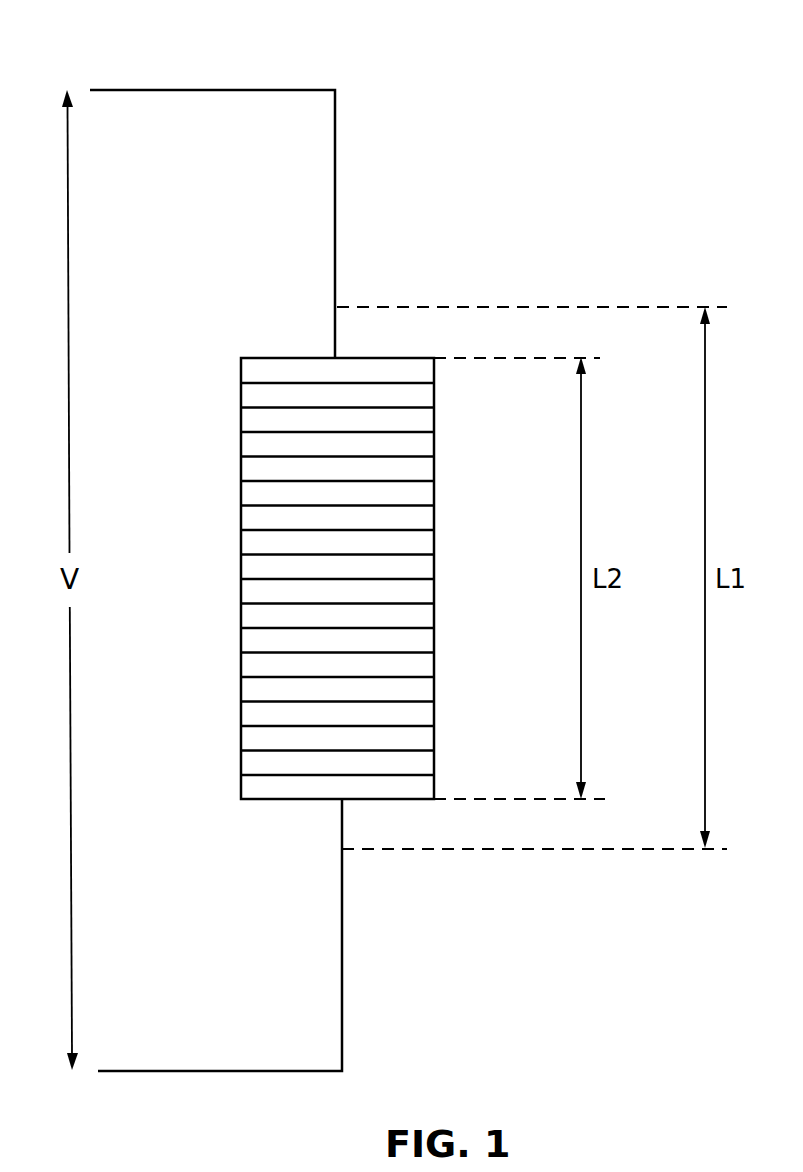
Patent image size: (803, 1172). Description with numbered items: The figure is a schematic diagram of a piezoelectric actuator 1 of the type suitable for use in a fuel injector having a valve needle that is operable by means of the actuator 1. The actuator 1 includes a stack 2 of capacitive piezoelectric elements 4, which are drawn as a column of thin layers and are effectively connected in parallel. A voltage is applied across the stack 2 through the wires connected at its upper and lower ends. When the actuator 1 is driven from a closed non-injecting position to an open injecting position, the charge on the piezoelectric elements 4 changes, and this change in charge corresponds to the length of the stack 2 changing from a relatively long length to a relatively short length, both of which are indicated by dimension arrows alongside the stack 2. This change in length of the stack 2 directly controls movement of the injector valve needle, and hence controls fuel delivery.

The piezoelectric actuator 1 is at (477, 150).
The stack 2 is at (240, 424).
The piezoelectric elements 4 is at (310, 592).